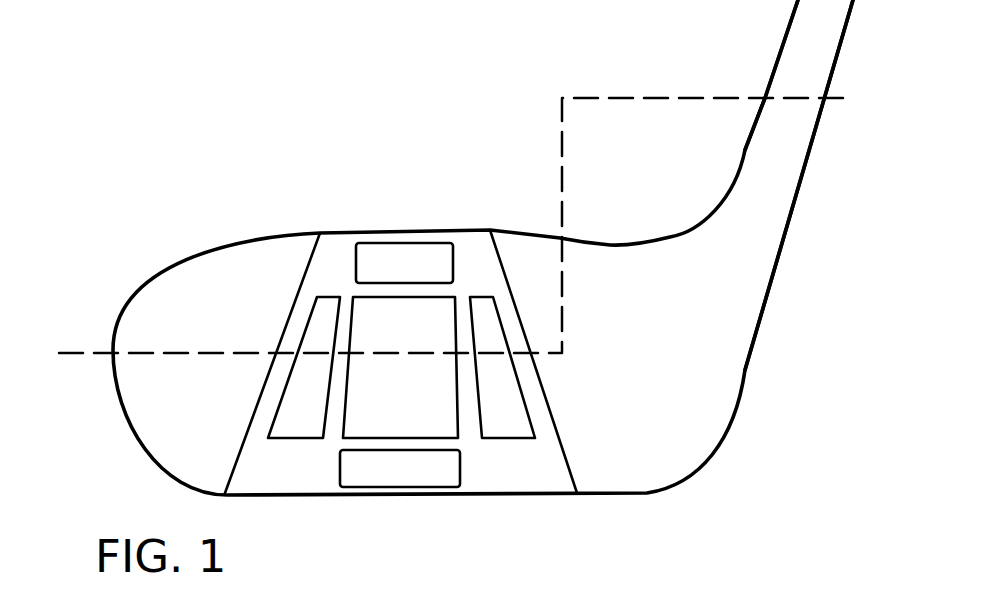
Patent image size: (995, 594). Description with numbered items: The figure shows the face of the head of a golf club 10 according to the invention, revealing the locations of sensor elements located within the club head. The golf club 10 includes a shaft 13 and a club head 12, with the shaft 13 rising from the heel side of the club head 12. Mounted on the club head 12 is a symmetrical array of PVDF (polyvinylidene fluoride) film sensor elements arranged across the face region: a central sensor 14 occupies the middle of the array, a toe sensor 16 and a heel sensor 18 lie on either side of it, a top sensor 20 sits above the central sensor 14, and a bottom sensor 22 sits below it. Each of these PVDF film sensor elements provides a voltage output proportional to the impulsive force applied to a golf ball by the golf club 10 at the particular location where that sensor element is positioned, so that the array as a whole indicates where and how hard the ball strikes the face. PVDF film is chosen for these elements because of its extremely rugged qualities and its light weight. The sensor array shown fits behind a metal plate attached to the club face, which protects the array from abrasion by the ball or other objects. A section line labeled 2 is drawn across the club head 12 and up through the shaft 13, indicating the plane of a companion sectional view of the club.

The golf club 10 is at (456, 274).
The club head 12 is at (138, 292).
The shaft 13 is at (793, 187).
The central sensor 14 is at (455, 430).
The toe sensor 16 is at (298, 342).
The heel sensor 18 is at (547, 407).
The top sensor 20 is at (405, 260).
The bottom sensor 22 is at (410, 483).
The section line 2- 2 is at (59, 353).